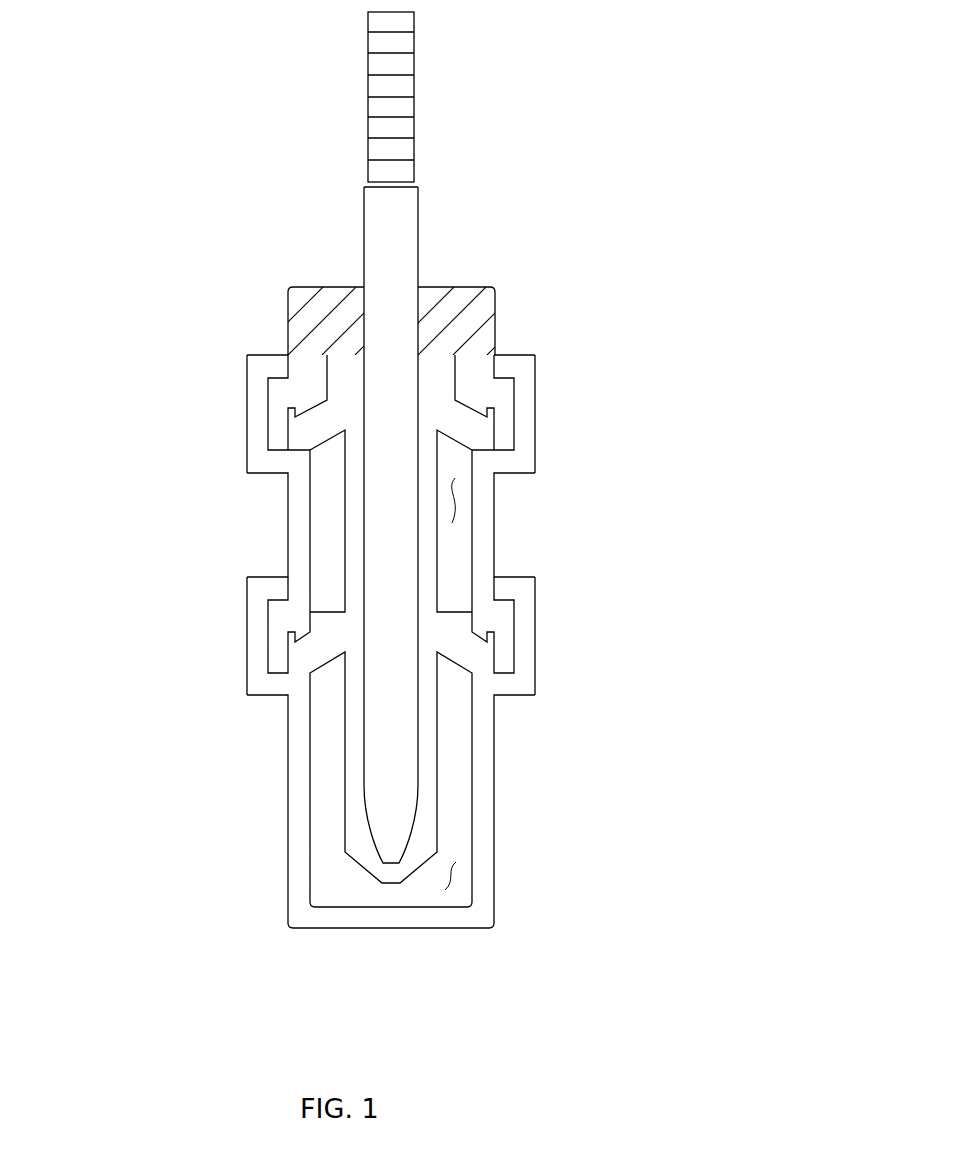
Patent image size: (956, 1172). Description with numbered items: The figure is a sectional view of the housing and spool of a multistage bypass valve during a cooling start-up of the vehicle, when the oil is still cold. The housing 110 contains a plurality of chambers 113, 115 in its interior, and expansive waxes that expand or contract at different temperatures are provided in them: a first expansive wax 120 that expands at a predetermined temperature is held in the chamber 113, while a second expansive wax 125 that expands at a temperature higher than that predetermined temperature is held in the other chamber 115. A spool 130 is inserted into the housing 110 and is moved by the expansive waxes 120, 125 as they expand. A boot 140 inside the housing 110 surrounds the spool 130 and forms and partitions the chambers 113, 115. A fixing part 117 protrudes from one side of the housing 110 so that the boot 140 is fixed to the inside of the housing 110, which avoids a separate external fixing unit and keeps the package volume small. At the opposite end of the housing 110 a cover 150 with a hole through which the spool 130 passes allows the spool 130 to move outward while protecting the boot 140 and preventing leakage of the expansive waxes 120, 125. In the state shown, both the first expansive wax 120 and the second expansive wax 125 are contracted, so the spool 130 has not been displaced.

The housing 110 is at (460, 925).
The chamber 113 is at (473, 805).
The chamber 115 is at (473, 563).
The fixing part 117 is at (260, 661).
The first expansive wax 120 is at (448, 877).
The second expansive wax 125 is at (450, 498).
The spool 130 is at (397, 231).
The boot 140 is at (455, 377).
The cover 150 is at (480, 304).